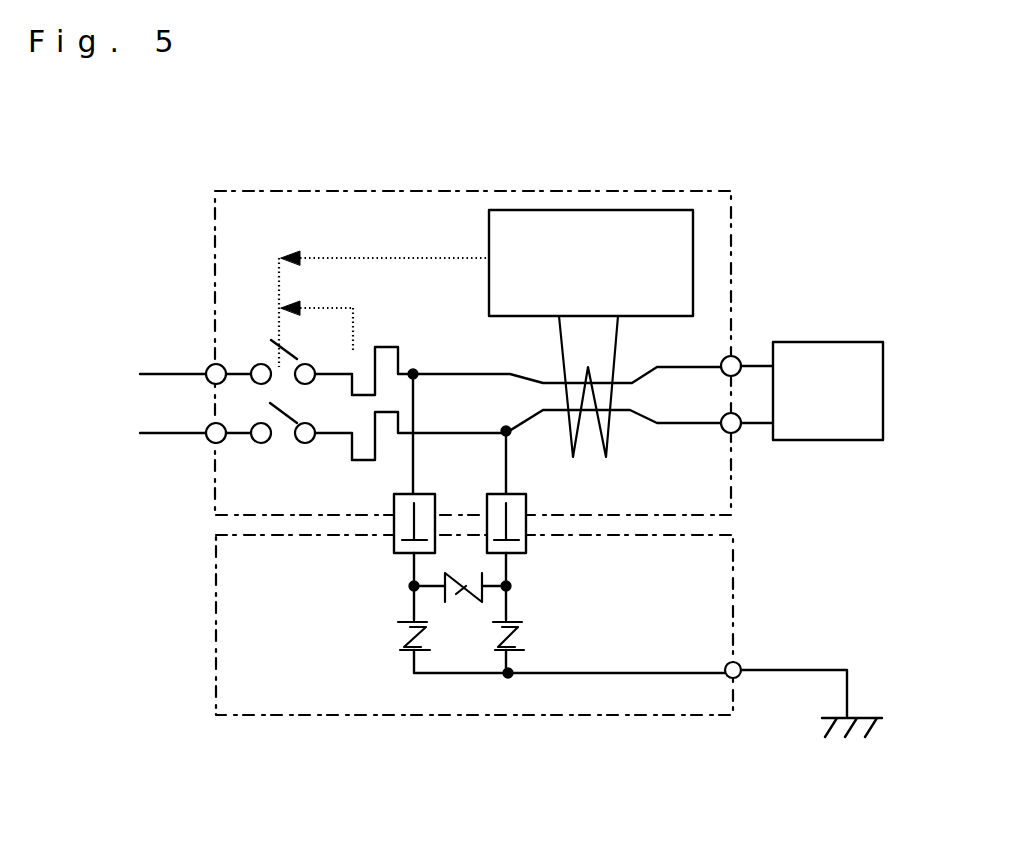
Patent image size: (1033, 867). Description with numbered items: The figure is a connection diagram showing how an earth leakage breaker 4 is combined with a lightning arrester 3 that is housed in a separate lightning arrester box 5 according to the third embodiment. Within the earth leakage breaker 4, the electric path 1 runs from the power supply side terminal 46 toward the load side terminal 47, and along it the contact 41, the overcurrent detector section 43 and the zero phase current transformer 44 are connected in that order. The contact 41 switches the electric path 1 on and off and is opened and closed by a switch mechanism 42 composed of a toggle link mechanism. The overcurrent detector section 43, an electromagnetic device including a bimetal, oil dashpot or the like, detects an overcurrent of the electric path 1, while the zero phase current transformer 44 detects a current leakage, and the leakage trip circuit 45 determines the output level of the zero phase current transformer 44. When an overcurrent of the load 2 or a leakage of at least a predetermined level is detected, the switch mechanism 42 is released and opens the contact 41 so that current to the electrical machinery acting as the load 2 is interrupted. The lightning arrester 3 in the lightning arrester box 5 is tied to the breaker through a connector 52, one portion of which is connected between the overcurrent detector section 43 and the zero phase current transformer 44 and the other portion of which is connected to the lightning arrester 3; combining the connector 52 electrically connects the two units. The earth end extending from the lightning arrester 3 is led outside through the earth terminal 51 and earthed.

The electric path 1 is at (446, 372).
The electrical machinery 2 is at (845, 342).
The lightning arrester 3 is at (518, 635).
The earth leakage breaker 4 is at (287, 193).
The lightning arrester box 5 is at (215, 648).
The contact 41 is at (283, 430).
The switch mechanism 42 is at (272, 287).
The overcurrent detector section 43 is at (395, 347).
The zero phase current transformer 44 is at (613, 437).
The leakage trip circuit 45 is at (582, 210).
The power supply side terminal 46 is at (205, 372).
The load side terminal 47 is at (732, 356).
The earth terminal 51 is at (737, 663).
The connector 52 is at (394, 555).